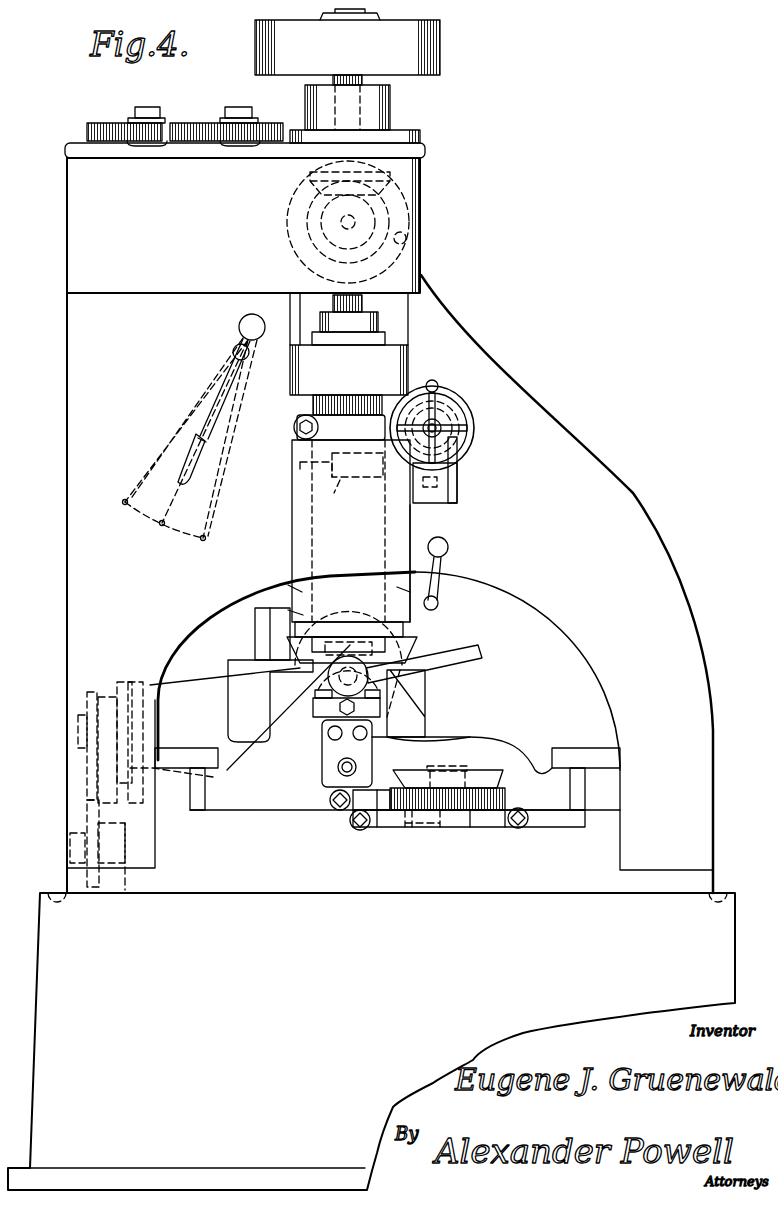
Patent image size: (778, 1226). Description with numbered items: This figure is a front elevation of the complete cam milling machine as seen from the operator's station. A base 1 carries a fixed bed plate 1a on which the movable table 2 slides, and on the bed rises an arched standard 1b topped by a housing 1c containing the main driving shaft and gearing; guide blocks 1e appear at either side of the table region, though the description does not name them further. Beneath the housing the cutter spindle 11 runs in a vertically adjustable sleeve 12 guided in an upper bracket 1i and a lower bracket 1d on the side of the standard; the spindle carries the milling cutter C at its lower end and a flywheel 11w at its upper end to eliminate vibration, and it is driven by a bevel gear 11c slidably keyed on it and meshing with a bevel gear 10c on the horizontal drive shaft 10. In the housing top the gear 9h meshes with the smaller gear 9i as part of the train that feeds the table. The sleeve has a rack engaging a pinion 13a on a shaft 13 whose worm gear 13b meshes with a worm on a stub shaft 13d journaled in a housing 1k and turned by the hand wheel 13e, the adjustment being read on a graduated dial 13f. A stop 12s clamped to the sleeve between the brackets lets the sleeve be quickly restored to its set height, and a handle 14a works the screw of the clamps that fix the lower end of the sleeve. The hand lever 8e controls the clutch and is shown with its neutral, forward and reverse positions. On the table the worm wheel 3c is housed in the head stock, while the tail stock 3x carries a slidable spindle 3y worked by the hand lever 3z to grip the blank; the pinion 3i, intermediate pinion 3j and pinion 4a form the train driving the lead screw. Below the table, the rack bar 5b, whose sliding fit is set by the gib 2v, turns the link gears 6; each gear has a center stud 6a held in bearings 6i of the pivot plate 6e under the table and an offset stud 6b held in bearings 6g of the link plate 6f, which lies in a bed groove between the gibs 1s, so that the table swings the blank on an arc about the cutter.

The base 1 is at (53, 983).
The bed plate 1a is at (292, 496).
The standard 1b is at (632, 497).
The housing 1c is at (70, 246).
The lower bracket or head 1d is at (412, 518).
The guide block 1e is at (196, 748).
The upper bracket 1i is at (410, 362).
The housing 1k is at (460, 476).
The gibs 1s is at (375, 827).
The movable table 2 is at (478, 742).
The gib 2v is at (355, 803).
The worm wheel 3c is at (310, 718).
The pinion 3i is at (87, 700).
The intermediate pinion 3j is at (100, 785).
The tail stock 3x is at (403, 713).
The slidable spindle 3y is at (293, 677).
The hand lever 3z is at (484, 655).
The pinion 4a is at (92, 823).
The rack bar 5b is at (383, 802).
The link gears 6 is at (503, 797).
The stud 6a is at (470, 765).
The stud 6b is at (440, 827).
The pivot plate 6e is at (493, 783).
The link plate 6f is at (480, 827).
The bearings 6g is at (410, 827).
The bearings 6i is at (427, 767).
The hand lever 8e is at (200, 428).
The gear 9h is at (93, 125).
The gear 9i is at (265, 125).
The drive shaft 10 is at (355, 222).
The bevel gear 10c is at (406, 238).
The cutter spindle 11 is at (362, 78).
The bevel gear 11c is at (398, 194).
The flywheel 11w is at (440, 47).
The sleeve 12 is at (313, 407).
The stop 12s is at (330, 433).
The shaft 13 is at (330, 465).
The pinion 13a is at (350, 483).
The worm gear 13b is at (440, 483).
The stub shaft 13d is at (448, 437).
The hand wheel 13e is at (445, 385).
The graduated dial 13f is at (450, 418).
The handle 14a is at (441, 562).
The milling cutter C is at (345, 662).